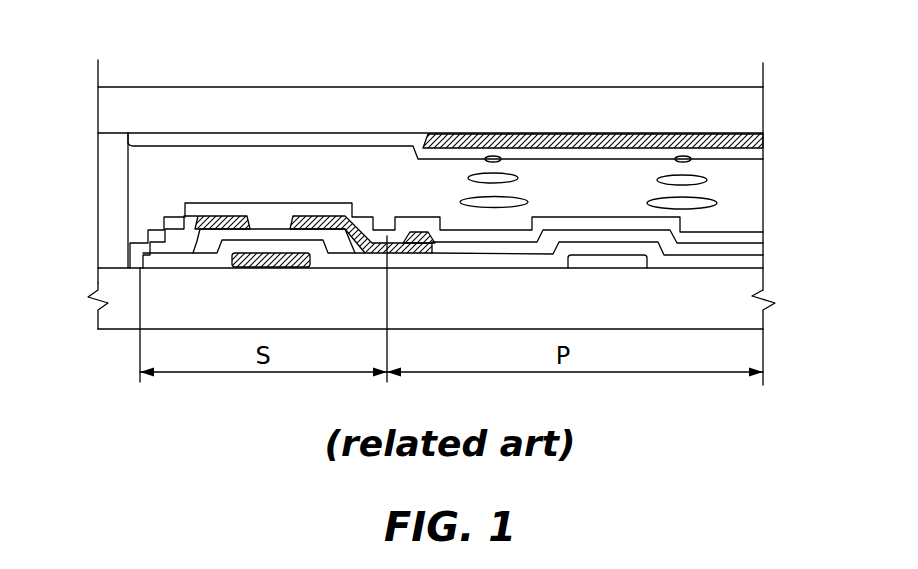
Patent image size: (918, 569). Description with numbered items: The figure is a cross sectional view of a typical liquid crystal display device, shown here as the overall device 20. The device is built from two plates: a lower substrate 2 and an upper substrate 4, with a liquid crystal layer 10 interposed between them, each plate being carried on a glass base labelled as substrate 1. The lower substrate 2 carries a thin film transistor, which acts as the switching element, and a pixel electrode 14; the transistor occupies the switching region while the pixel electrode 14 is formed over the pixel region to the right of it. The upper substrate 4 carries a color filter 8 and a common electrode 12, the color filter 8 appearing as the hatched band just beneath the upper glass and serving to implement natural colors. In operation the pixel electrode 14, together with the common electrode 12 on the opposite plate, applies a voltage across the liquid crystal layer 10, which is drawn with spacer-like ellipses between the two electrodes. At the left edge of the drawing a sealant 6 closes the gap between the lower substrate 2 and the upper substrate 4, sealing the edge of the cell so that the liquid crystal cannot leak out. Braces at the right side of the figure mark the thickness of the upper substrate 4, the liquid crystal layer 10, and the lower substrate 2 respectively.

The liquid crystal display device 20 is at (256, 70).
The substrate 1 is at (459, 116).
The upper substrate 4 is at (775, 89).
The color filter 8 is at (628, 143).
The common electrode 12 is at (735, 157).
The liquid crystal layer 10 is at (775, 160).
The sealant 6 is at (100, 196).
The lower substrate 2 is at (500, 266).
The pixel electrode 14 is at (752, 250).